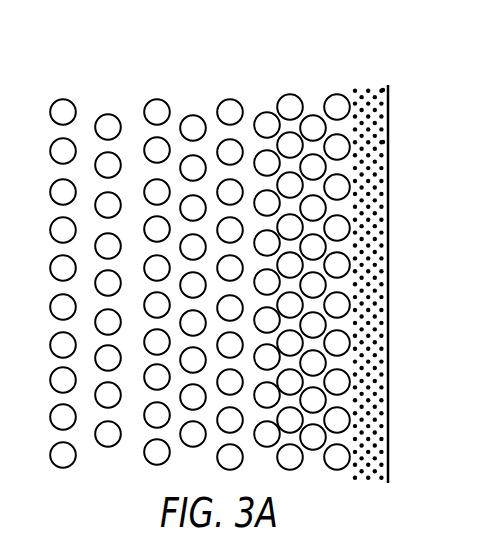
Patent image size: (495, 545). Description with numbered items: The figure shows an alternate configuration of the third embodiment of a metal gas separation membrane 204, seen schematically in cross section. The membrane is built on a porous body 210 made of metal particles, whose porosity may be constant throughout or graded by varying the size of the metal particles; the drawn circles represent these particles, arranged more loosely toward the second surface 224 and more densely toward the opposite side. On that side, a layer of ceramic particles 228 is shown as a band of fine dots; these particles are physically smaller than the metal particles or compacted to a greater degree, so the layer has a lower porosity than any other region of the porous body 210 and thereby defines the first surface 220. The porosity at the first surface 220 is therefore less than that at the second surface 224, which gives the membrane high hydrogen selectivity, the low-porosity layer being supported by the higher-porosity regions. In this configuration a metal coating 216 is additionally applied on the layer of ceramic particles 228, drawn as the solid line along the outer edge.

The metal gas separation membrane 204 is at (181, 100).
The porous body 210 is at (250, 108).
The second surface 224 is at (62, 247).
The first surface 220 is at (343, 211).
The layer of ceramic particles 228 is at (383, 90).
The metal coating 216 is at (388, 297).